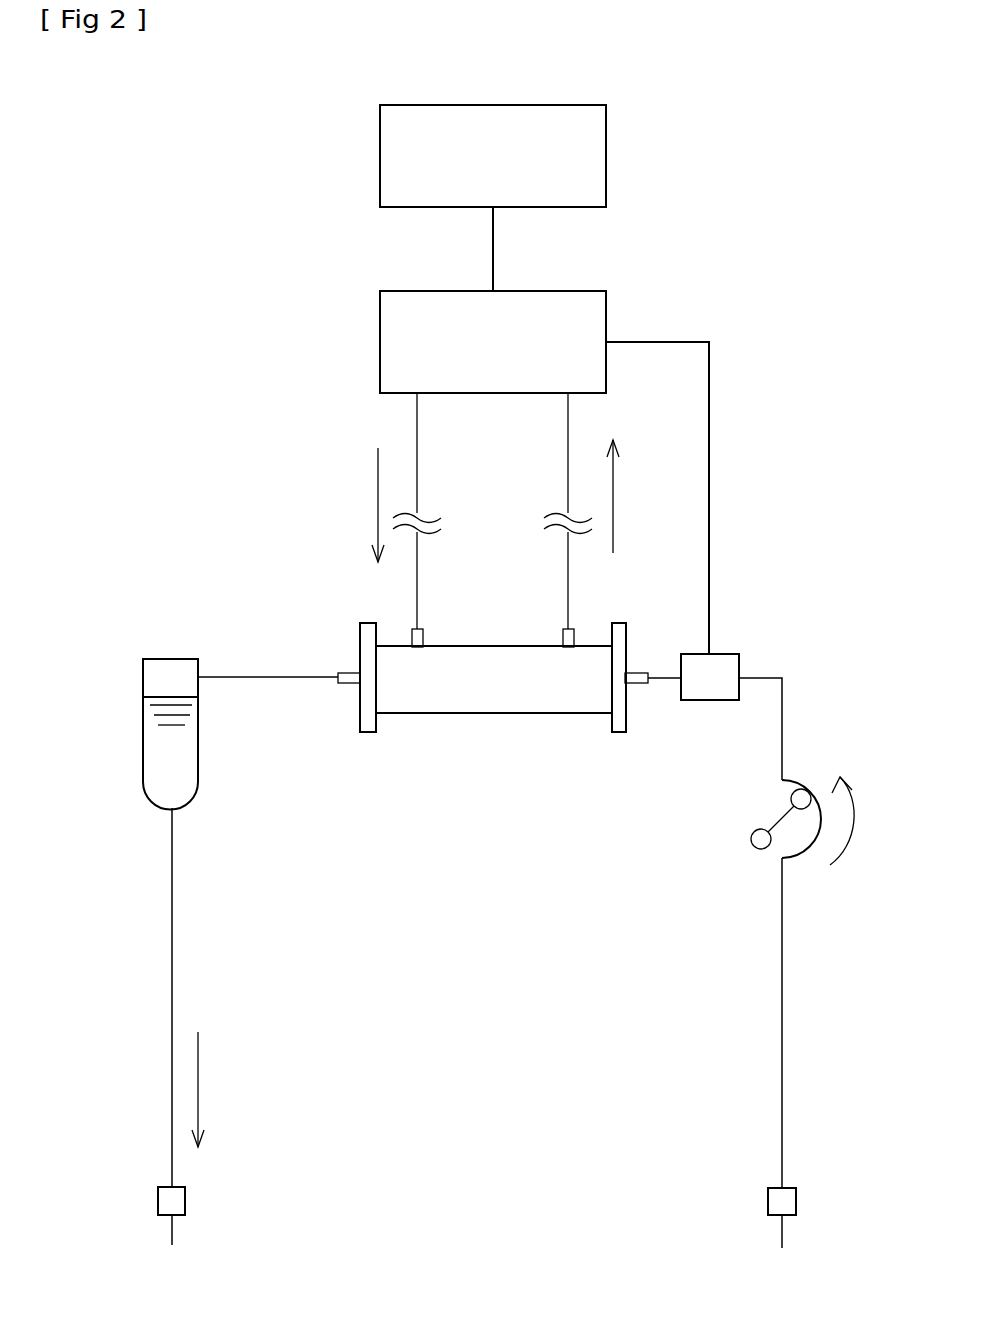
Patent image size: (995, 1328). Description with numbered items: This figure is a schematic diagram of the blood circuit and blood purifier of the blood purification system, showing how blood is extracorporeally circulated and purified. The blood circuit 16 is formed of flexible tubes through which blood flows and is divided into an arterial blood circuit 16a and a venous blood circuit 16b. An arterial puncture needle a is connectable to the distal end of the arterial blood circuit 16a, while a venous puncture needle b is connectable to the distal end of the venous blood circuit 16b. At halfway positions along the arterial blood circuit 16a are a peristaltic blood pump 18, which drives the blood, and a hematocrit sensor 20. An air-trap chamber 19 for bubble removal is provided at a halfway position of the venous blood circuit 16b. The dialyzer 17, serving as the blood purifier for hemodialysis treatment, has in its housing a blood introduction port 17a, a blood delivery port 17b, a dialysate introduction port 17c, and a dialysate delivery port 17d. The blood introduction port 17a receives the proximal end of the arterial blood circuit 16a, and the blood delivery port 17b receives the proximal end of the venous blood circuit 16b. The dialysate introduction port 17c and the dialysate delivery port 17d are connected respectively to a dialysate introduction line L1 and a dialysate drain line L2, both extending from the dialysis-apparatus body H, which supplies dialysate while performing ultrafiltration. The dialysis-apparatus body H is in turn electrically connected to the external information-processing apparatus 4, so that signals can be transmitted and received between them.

The external information-processing apparatus 4 is at (380, 156).
The dialysis-apparatus body H is at (380, 321).
The dialysate introduction line L1 is at (417, 428).
The dialysate drain line L2 is at (568, 475).
The blood circuit 16 is at (222, 600).
The arterial blood circuit 16a is at (782, 960).
The venous blood circuit 16b is at (172, 912).
The dialyzer 17 is at (532, 714).
The blood introduction port 17a is at (637, 672).
The blood delivery port 17b is at (342, 668).
The dialysate introduction port 17c is at (420, 628).
The dialysate delivery port 17d is at (566, 628).
The peristaltic blood pump 18 is at (755, 818).
The air-trap chamber 19 is at (198, 745).
The hematocrit sensor 20 is at (727, 652).
The arterial puncture needle a is at (782, 1240).
The venous puncture needle b is at (172, 1232).